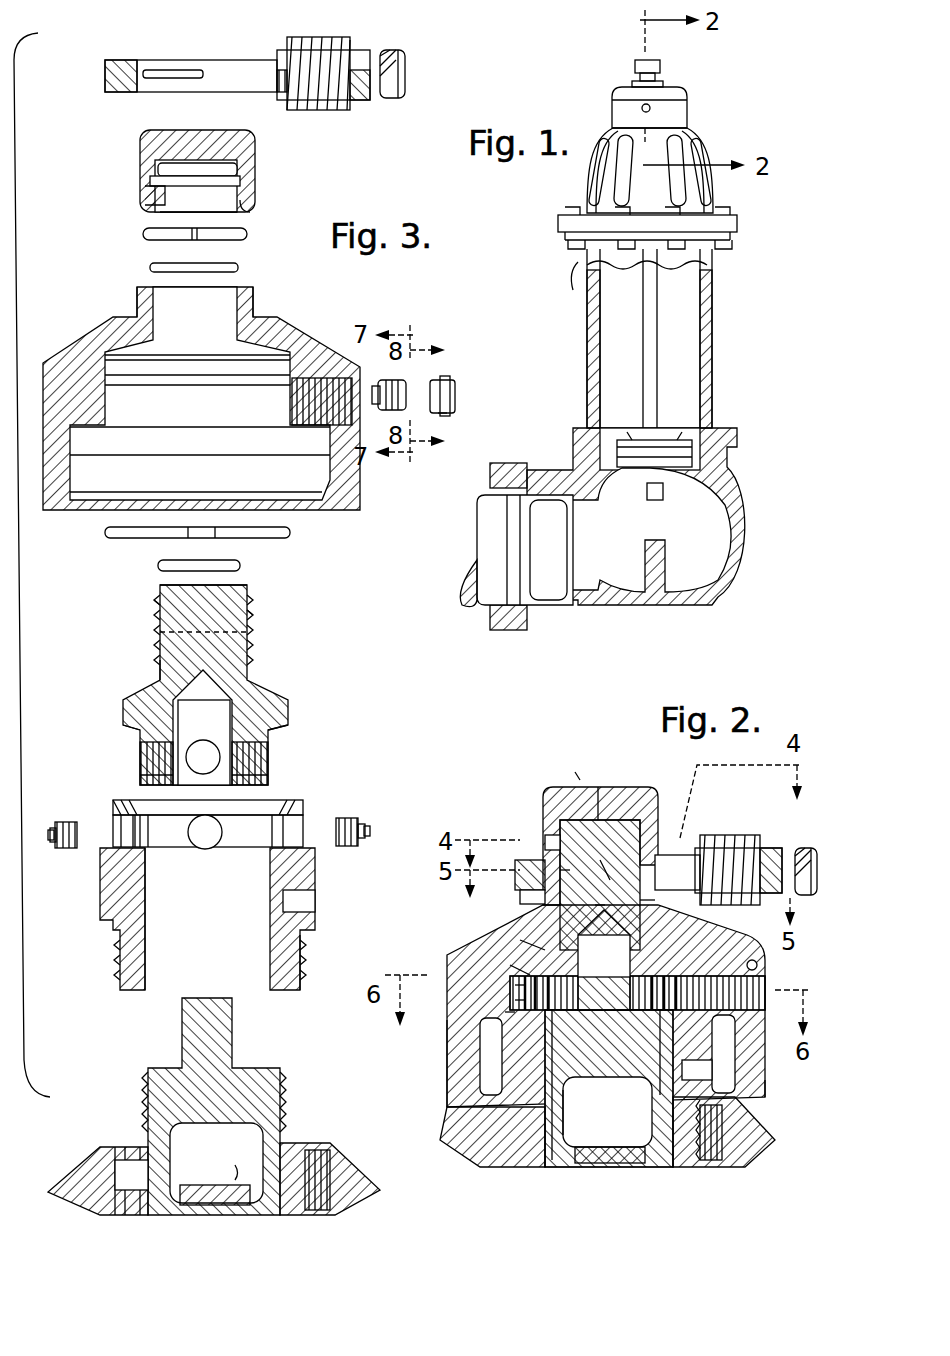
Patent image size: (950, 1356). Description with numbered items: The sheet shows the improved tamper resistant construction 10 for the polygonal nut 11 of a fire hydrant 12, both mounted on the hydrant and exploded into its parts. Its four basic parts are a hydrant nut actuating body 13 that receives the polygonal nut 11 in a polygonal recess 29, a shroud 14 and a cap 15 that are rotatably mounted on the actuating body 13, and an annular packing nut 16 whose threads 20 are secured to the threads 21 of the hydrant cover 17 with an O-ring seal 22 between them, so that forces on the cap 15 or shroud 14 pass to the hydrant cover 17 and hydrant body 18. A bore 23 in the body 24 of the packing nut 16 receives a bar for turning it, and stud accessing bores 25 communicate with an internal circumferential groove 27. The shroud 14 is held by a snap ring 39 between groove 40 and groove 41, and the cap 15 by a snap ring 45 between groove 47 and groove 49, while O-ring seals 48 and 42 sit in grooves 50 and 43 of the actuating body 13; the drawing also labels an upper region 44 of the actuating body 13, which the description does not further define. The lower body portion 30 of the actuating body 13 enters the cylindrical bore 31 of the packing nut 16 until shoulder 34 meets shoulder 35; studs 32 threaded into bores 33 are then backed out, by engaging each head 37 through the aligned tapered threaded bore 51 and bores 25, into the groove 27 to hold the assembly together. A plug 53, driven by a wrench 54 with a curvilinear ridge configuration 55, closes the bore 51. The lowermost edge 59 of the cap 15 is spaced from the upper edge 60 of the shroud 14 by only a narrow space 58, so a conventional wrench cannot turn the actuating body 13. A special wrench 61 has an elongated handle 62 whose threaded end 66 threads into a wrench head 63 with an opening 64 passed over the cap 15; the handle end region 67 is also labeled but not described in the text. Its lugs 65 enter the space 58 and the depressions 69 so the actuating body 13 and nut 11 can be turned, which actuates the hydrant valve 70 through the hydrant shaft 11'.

In FIG. 1, the tamper resistant construction 10 is at (705, 96).
In FIG. 2, the tamper resistant construction 10 is at (575, 770).
In FIG. 3, the polygonal nut 11 is at (192, 1106).
In FIG. 3, the hydrant shaft 11' is at (238, 1164).
In FIG. 1, the hydrant shaft 11' is at (710, 344).
In FIG. 3, the fire hydrant 12 is at (74, 1156).
In FIG. 1, the fire hydrant 12 is at (712, 135).
In FIG. 2, the fire hydrant 12 is at (455, 1125).
In FIG. 3, the hydrant nut actuating body 13 is at (250, 668).
In FIG. 2, the hydrant nut actuating body 13 is at (545, 920).
In FIG. 3, the shroud 14 is at (80, 345).
In FIG. 1, the shroud 14 is at (620, 92).
In FIG. 2, the shroud 14 is at (450, 971).
In FIG. 3, the cap 15 is at (140, 168).
In FIG. 1, the cap 15 is at (635, 65).
In FIG. 2, the cap 15 is at (545, 790).
In FIG. 3, the packing nut 16 is at (290, 810).
In FIG. 2, the packing nut 16 is at (447, 1075).
In FIG. 3, the hydrant cover 17 is at (350, 1180).
In FIG. 1, the hydrant cover 17 is at (587, 170).
In FIG. 2, the hydrant cover 17 is at (750, 1122).
In FIG. 1, the hydrant body 18 is at (712, 268).
In FIG. 3, the threads 20 is at (300, 962).
In FIG. 2, the threads 20 is at (462, 1150).
In FIG. 3, the threads 21 is at (170, 1176).
In FIG. 2, the threads 21 is at (535, 1164).
In FIG. 3, the O-ring seal 22 is at (130, 1147).
In FIG. 2, the O-ring seal 22 is at (530, 1128).
In FIG. 3, the bore 23 is at (315, 900).
In FIG. 2, the bore 23 is at (735, 1076).
In FIG. 3, the body 24 is at (100, 911).
In FIG. 2, the body 24 is at (763, 1096).
In FIG. 3, the bores 25 is at (305, 822).
In FIG. 2, the bores 25 is at (515, 985).
In FIG. 3, the internal circumferential groove 27 is at (140, 835).
In FIG. 2, the internal circumferential groove 27 is at (515, 1000).
In FIG. 3, the polygonal recess 29 is at (230, 718).
In FIG. 2, the polygonal recess 29 is at (608, 896).
In FIG. 3, the lower body portion 30 is at (140, 785).
In FIG. 2, the lower body portion 30 is at (609, 1030).
In FIG. 3, the cylindrical bore 31 is at (147, 944).
In FIG. 2, the cylindrical bore 31 is at (563, 1096).
In FIG. 3, the studs 32 is at (338, 823).
In FIG. 2, the studs 32 is at (607, 1055).
In FIG. 3, the bores 33 is at (210, 752).
In FIG. 2, the bores 33 is at (600, 973).
In FIG. 3, the shoulder 34 is at (138, 740).
In FIG. 3, the shoulder 35 is at (150, 824).
In FIG. 2, the shoulder 35 is at (510, 975).
In FIG. 3, the head 37 is at (372, 830).
In FIG. 2, the head 37 is at (505, 1012).
In FIG. 3, the snap ring 39 is at (105, 532).
In FIG. 2, the snap ring 39 is at (520, 945).
In FIG. 3, the groove 40 is at (290, 370).
In FIG. 3, the groove 41 is at (290, 712).
In FIG. 3, the O-ring seal 42 is at (242, 566).
In FIG. 2, the O-ring seal 42 is at (520, 892).
In FIG. 3, the groove 43 is at (160, 660).
In FIG. 3, the top face 44 is at (160, 598).
In FIG. 2, the top face 44 is at (615, 790).
In FIG. 3, the snap ring 45 is at (143, 235).
In FIG. 2, the snap ring 45 is at (548, 838).
In FIG. 3, the groove 47 is at (142, 193).
In FIG. 3, the O-ring seal 48 is at (238, 268).
In FIG. 2, the O-ring seal 48 is at (517, 860).
In FIG. 3, the groove 49 is at (165, 605).
In FIG. 3, the groove 50 is at (248, 615).
In FIG. 3, the tapered threaded bore 51 is at (300, 420).
In FIG. 2, the tapered threaded bore 51 is at (637, 973).
In FIG. 3, the plug 53 is at (405, 385).
In FIG. 1, the plug 53 is at (642, 108).
In FIG. 2, the plug 53 is at (760, 963).
In FIG. 3, the wrench 54 is at (455, 395).
In FIG. 3, the curvilinear ridge configuration 55 is at (445, 413).
In FIG. 2, the narrow space 58 is at (601, 856).
In FIG. 3, the lowermost edge 59 is at (248, 210).
In FIG. 2, the lowermost edge 59 is at (660, 840).
In FIG. 3, the upper edge 60 is at (150, 292).
In FIG. 2, the upper edge 60 is at (643, 896).
In FIG. 3, the special wrench 61 is at (405, 55).
In FIG. 2, the special wrench 61 is at (805, 848).
In FIG. 3, the elongated handle 62 is at (392, 100).
In FIG. 2, the elongated handle 62 is at (765, 848).
In FIG. 3, the wrench head 63 is at (290, 45).
In FIG. 2, the wrench head 63 is at (725, 835).
In FIG. 3, the opening 64 is at (148, 60).
In FIG. 3, the lugs 65 is at (173, 70).
In FIG. 3, the threaded end 66 is at (272, 92).
In FIG. 3, the bolt head 67 is at (105, 78).
In FIG. 2, the bolt head 67 is at (576, 871).
In FIG. 3, the depressions 69 is at (165, 632).
In FIG. 1, the hydrant valve 70 is at (641, 496).